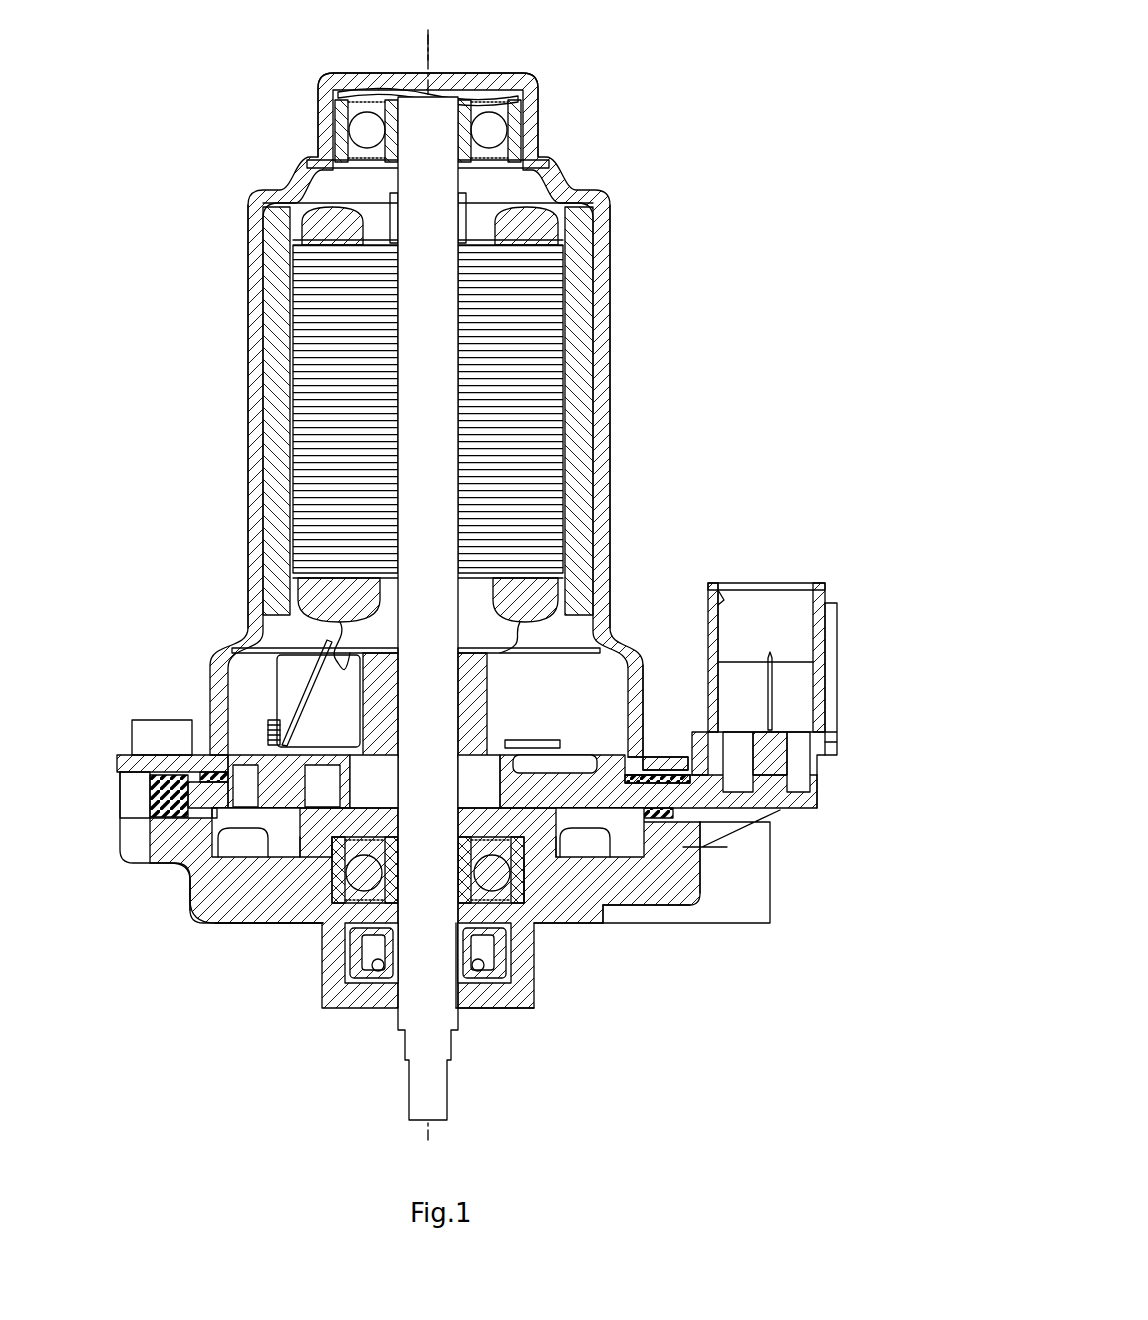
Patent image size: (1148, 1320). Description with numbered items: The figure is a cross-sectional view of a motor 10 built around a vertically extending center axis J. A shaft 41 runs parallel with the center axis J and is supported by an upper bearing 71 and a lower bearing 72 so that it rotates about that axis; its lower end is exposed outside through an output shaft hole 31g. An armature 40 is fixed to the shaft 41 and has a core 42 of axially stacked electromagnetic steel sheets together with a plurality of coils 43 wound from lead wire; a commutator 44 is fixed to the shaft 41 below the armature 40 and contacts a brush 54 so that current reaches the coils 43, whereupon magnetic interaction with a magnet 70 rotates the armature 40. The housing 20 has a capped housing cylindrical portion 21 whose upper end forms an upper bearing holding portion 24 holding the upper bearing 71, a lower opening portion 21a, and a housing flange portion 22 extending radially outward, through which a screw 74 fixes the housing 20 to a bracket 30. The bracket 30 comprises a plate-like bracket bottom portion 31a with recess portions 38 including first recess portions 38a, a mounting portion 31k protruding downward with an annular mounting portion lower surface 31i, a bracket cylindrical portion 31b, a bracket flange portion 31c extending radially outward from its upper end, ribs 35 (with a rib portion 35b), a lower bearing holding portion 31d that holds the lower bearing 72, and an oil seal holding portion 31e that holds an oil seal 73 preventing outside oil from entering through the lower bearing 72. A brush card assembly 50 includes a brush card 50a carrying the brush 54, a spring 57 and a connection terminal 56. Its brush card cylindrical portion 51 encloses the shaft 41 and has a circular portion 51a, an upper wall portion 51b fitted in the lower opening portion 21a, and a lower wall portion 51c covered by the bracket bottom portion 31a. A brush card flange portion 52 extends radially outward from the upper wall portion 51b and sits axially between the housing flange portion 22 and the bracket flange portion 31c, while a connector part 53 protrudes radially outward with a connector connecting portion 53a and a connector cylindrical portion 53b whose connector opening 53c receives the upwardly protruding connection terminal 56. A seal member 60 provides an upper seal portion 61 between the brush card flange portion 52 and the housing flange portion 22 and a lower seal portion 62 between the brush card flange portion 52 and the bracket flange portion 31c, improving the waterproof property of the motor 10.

The motor 10 is at (692, 57).
The center axis J is at (440, 48).
The housing 20 is at (455, 413).
The housing cylindrical portion 21 is at (600, 443).
The lower opening portion 21a is at (610, 760).
The housing flange portion 22 is at (180, 758).
The upper bearing holding portion 24 is at (540, 115).
The bracket 30 is at (490, 950).
The bracket bottom portion 31a is at (235, 880).
The bracket cylindrical portion 31b is at (660, 880).
The bracket flange portion 31c is at (724, 890).
The lower bearing holding portion 31d is at (553, 880).
The oil seal holding portion 31e is at (522, 983).
The output shaft hole 31g is at (448, 930).
The mounting portion lower surface 31i is at (600, 920).
The mounting portion 31k is at (268, 920).
The ribs 35 is at (290, 900).
The fixing member portion 35b is at (558, 860).
The recess portions 38 is at (293, 920).
The first recess portions 38a is at (295, 905).
The armature 40 is at (437, 608).
The shaft 41 is at (408, 1015).
The core 42 is at (540, 288).
The coils 43 is at (330, 228).
The commutator 44 is at (357, 557).
The brush card assembly 50 is at (563, 756).
The brush card 50a is at (824, 789).
The brush card cylindrical portion 51 is at (408, 879).
The circular portion 51a is at (655, 820).
The upper wall portion 51b is at (605, 760).
The lower wall portion 51c is at (200, 830).
The brush card flange portion 52 is at (195, 790).
The connector part 53 is at (787, 618).
The connector connecting portion 53a is at (755, 610).
The connector cylindrical portion 53b is at (833, 605).
The connector opening 53c is at (722, 597).
The brush 54 is at (268, 718).
The connection terminal 56 is at (775, 688).
The spring 57 is at (272, 745).
The seal member 60 is at (800, 1057).
The upper seal portion 61 is at (217, 780).
The lower seal portion 62 is at (260, 860).
The magnet 70 is at (578, 385).
The upper bearing 71 is at (367, 122).
The lower bearing 72 is at (348, 983).
The oil seal 73 is at (480, 967).
The screw 74 is at (160, 722).